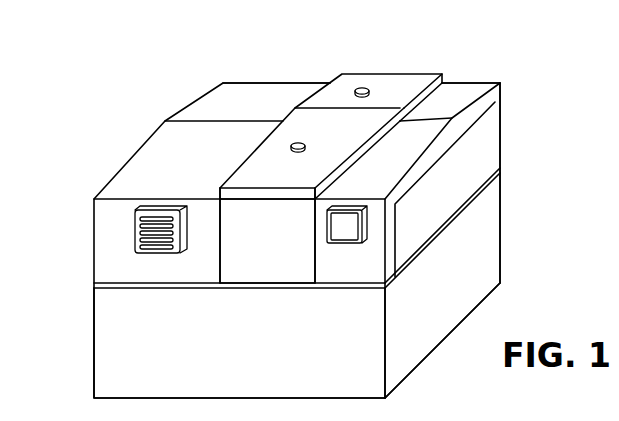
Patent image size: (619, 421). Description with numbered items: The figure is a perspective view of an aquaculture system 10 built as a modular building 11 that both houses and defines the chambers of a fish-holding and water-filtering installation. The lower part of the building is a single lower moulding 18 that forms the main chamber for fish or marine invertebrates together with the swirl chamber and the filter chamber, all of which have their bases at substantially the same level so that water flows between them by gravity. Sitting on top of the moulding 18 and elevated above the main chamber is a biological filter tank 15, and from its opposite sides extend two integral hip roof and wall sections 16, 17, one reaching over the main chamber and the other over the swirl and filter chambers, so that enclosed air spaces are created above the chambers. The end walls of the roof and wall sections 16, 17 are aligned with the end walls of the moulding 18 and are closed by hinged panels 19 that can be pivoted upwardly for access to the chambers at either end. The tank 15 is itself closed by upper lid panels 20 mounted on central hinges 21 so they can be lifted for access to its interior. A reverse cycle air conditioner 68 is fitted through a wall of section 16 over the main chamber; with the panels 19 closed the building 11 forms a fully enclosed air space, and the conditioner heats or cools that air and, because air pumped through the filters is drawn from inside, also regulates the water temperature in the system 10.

The aquaculture system 10 is at (537, 103).
The modular building 11 is at (92, 363).
The biological filter tank 15 is at (295, 260).
The integral hip roof and wall section 16 is at (223, 102).
The integral hip roof and wall section 17 is at (462, 90).
The lower moulding 18 is at (108, 319).
The hinged panel 19 is at (487, 159).
The upper lid panel 20 is at (413, 80).
The central hinge 21 is at (300, 105).
The reverse cycle air conditioner 68 is at (135, 221).